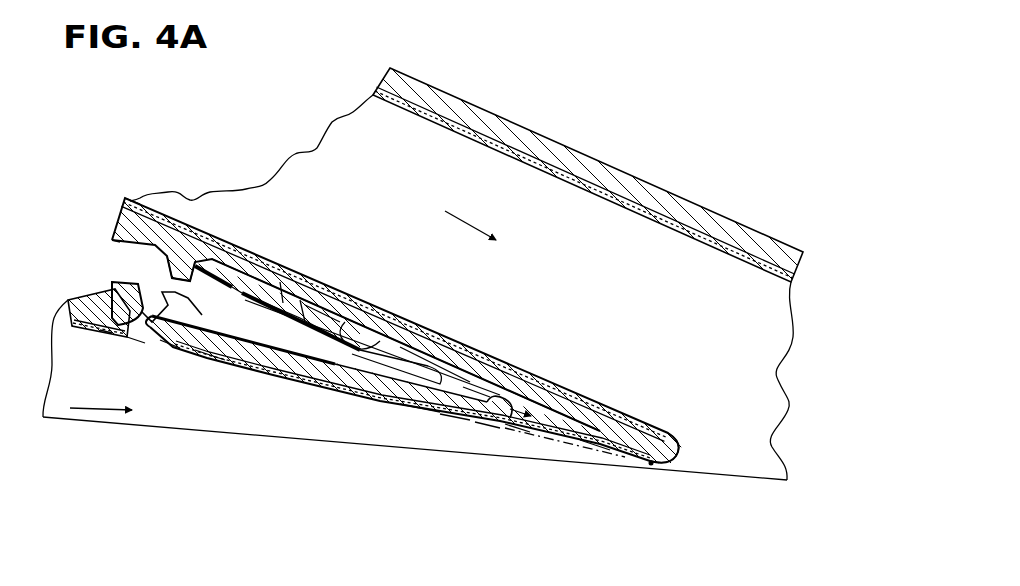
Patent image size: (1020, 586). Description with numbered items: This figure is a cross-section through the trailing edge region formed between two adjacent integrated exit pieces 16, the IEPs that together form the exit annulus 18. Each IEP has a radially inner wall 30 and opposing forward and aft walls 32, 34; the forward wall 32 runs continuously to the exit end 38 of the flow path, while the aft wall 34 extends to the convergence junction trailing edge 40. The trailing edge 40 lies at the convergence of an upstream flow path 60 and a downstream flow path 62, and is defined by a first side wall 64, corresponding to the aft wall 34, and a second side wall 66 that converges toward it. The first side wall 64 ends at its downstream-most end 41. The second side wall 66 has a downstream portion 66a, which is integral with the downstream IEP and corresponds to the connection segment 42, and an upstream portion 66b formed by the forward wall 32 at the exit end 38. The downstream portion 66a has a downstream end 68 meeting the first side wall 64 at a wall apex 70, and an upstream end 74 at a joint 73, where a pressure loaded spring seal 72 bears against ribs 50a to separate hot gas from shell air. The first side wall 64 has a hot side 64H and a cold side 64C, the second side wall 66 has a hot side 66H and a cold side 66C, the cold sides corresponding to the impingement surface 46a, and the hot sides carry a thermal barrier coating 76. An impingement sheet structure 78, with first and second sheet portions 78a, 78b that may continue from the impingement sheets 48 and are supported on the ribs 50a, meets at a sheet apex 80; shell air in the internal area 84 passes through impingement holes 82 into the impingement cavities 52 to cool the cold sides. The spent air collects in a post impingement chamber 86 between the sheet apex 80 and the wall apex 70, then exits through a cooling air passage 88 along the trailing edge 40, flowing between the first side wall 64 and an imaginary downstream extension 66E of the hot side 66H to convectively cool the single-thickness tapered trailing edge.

The integrated exit piece 16 is at (505, 78).
The exit annulus 18 is at (325, 443).
The radially inner wall 30 is at (343, 125).
The forward wall 32 is at (683, 196).
The aft wall 34 is at (320, 300).
The exit end 38 is at (125, 335).
The convergence junction trailing edge 40 is at (650, 468).
The downstream-most end of the first side wall 41 is at (683, 462).
The connection segment 42 is at (387, 423).
The impingement surface 46a is at (135, 198).
The impingement sheet 48 is at (118, 245).
The ribs 50a is at (80, 290).
The impingement chambers or cavities 52 is at (298, 265).
The upstream flow path 60 is at (95, 420).
The downstream flow path 62 is at (464, 198).
The first side wall 64 is at (462, 343).
The cold side of the first side wall 64C is at (365, 305).
The hot side of the first side wall 64H is at (532, 386).
The second side wall 66 is at (225, 420).
The downstream portion of the second side wall 66a is at (452, 428).
The upstream portion of the second side wall 66b is at (100, 330).
The cold side of the second side wall 66C is at (345, 396).
The imaginary downstream extension 66E is at (598, 460).
The hot side of the second side wall 66H is at (418, 420).
The downstream end 68 is at (485, 430).
The wall apex 70 is at (523, 440).
The pressure loaded spring seal 72 is at (148, 345).
The joint 73 is at (140, 290).
The upstream end 74 is at (180, 352).
The thermal barrier coating 76 is at (498, 338).
The impingement sheet structure 78 is at (288, 283).
The first sheet portion 78a is at (262, 278).
The second sheet portion 78b is at (288, 372).
The sheet apex 80 is at (385, 322).
The impingement holes 82 is at (242, 290).
The internal area 84 is at (212, 368).
The post impingement chamber 86 is at (414, 322).
The cooling air passage 88 is at (548, 455).